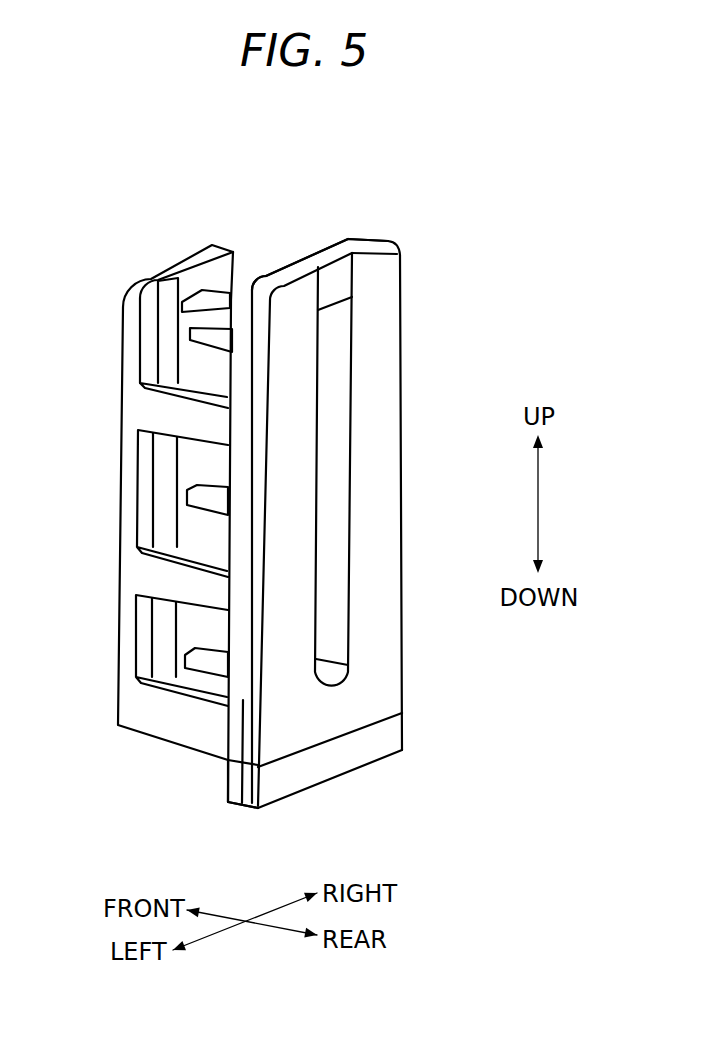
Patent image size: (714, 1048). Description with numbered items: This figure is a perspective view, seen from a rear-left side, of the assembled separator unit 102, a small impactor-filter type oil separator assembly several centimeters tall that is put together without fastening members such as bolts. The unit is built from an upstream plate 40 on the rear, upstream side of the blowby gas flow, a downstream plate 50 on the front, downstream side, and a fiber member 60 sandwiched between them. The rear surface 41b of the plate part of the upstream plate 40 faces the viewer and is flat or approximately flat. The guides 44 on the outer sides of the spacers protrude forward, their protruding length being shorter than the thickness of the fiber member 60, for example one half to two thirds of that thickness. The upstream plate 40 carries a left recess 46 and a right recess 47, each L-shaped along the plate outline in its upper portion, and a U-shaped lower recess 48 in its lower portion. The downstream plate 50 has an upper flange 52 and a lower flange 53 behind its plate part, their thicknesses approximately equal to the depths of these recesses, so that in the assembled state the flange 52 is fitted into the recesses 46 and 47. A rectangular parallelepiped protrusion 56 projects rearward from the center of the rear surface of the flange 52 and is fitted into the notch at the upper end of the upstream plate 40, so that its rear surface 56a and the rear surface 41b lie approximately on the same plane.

The separator unit 102 is at (419, 193).
The upstream plate 40 is at (355, 750).
The rear surface 41b is at (378, 455).
The guides 44 is at (200, 337).
The left recess 46 is at (278, 276).
The right recess 47 is at (357, 241).
The lower recess 48 is at (238, 752).
The downstream plate 50 is at (157, 718).
The upper flange 52 is at (322, 252).
The lower flange 53 is at (237, 787).
The protrusion 56 is at (352, 280).
The rear surface of the protrusion 56a is at (335, 289).
The fiber member 60 is at (195, 633).